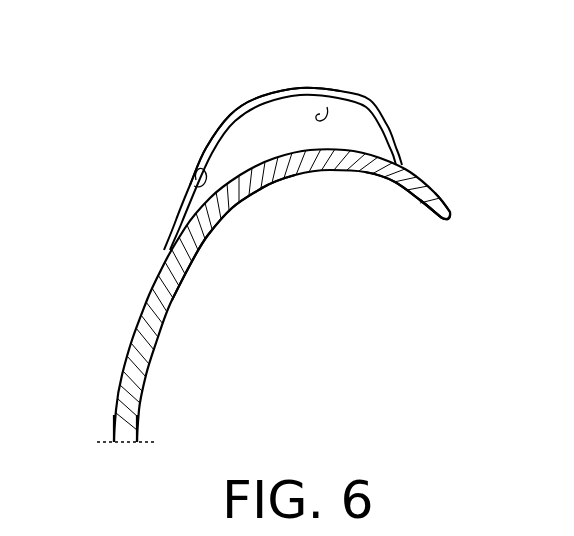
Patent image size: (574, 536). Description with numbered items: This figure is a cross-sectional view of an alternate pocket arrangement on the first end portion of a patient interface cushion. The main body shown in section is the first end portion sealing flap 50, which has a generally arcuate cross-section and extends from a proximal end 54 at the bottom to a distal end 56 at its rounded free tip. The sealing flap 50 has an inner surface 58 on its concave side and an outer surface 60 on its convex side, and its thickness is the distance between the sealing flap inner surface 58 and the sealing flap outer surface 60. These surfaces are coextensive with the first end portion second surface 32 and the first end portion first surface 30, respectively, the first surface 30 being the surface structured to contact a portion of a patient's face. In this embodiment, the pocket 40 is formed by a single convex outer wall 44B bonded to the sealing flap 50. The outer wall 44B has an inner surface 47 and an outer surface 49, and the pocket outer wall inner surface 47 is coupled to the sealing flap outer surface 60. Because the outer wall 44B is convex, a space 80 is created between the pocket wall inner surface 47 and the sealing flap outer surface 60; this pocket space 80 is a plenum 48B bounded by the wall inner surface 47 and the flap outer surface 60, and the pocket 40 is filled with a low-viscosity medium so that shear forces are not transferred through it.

The first end portion first surface 30 is at (428, 180).
The first end portion second surface 32 is at (420, 203).
The pocket 40 is at (295, 127).
The convex outer wall 44B is at (225, 121).
The pocket outer wall inner surface 47 is at (193, 185).
The plenum 48B is at (348, 130).
The pocket outer wall outer surface 49 is at (197, 150).
The first end portion sealing flap 50 is at (233, 204).
The proximal end 54 is at (114, 414).
The distal end 56 is at (458, 213).
The sealing flap inner surface 58 is at (188, 243).
The sealing flap outer surface 60 is at (263, 160).
The space 80 is at (327, 107).